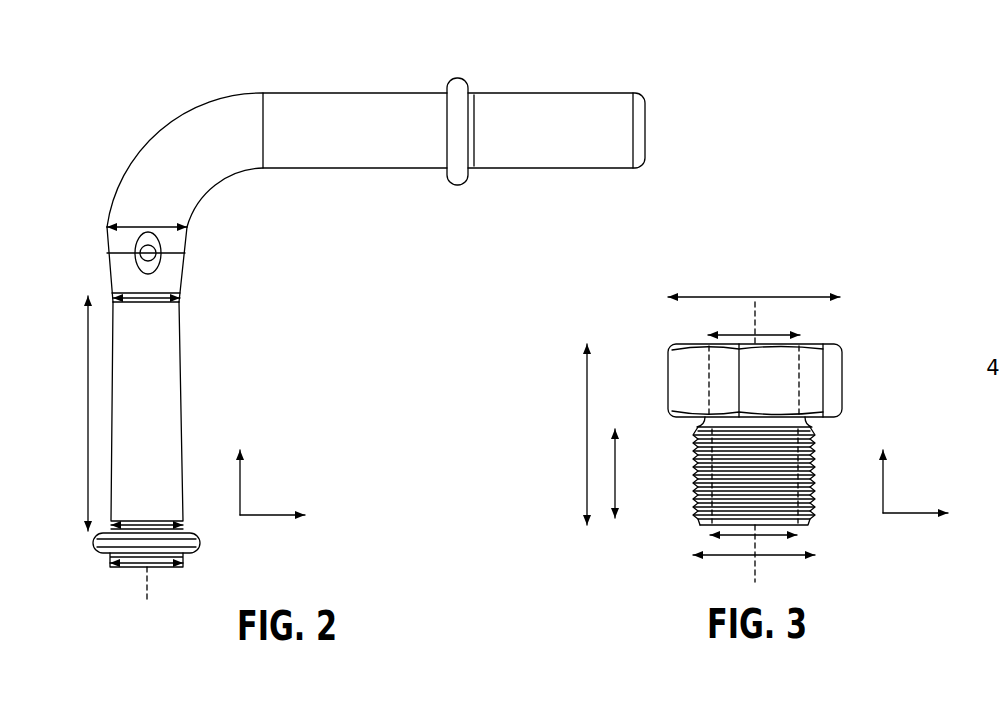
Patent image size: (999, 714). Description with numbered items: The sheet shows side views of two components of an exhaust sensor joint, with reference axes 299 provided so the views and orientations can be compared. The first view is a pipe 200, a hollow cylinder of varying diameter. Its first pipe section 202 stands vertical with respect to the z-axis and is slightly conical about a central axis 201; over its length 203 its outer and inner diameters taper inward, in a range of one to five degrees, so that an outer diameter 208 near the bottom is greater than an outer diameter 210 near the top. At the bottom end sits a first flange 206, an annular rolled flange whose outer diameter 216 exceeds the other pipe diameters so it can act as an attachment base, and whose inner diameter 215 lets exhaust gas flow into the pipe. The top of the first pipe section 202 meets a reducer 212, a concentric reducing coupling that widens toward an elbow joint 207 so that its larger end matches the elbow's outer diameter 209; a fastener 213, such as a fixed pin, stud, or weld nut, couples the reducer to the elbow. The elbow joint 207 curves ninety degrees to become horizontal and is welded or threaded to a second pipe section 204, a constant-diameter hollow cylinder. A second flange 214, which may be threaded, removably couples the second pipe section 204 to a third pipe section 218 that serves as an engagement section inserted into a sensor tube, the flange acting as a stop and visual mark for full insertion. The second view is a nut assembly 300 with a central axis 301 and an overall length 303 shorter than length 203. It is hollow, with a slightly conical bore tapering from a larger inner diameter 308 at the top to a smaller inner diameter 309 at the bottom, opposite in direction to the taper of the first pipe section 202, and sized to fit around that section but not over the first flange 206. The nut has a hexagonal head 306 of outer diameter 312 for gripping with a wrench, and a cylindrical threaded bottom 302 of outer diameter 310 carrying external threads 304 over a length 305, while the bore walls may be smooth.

In FIG. 2, the pipe 200 is at (118, 86).
In FIG. 2, the central axis 201 is at (143, 587).
In FIG. 2, the first pipe section 202 is at (185, 320).
In FIG. 2, the length 203 is at (88, 405).
In FIG. 2, the second pipe section 204 is at (302, 170).
In FIG. 2, the first flange 206 is at (202, 538).
In FIG. 2, the elbow joint 207 is at (140, 153).
In FIG. 2, the outer diameter 208 is at (148, 521).
In FIG. 2, the outer diameter 209 is at (127, 225).
In FIG. 2, the outer diameter 210 is at (152, 298).
In FIG. 2, the reducer 212 is at (107, 275).
In FIG. 2, the fastener 213 is at (150, 255).
In FIG. 2, the second flange 214 is at (468, 183).
In FIG. 2, the inner diameter 215 is at (155, 565).
In FIG. 2, the outer diameter 216 is at (113, 548).
In FIG. 2, the third pipe section 218 is at (608, 170).
In FIG. 2, the reference axes 299 is at (298, 447).
In FIG. 3, the reference axes 299 is at (936, 446).
In FIG. 3, the nut assembly 300 is at (811, 269).
In FIG. 3, the central axis 301 is at (757, 563).
In FIG. 3, the threaded bottom 302 is at (824, 458).
In FIG. 3, the length 303 is at (587, 430).
In FIG. 3, the external threads 304 is at (693, 477).
In FIG. 3, the length 305 is at (615, 470).
In FIG. 3, the head 306 is at (842, 362).
In FIG. 3, the inner diameter 308 is at (765, 336).
In FIG. 3, the inner diameter 309 is at (770, 545).
In FIG. 3, the outer diameter 310 is at (760, 560).
In FIG. 3, the outer diameter 312 is at (747, 295).